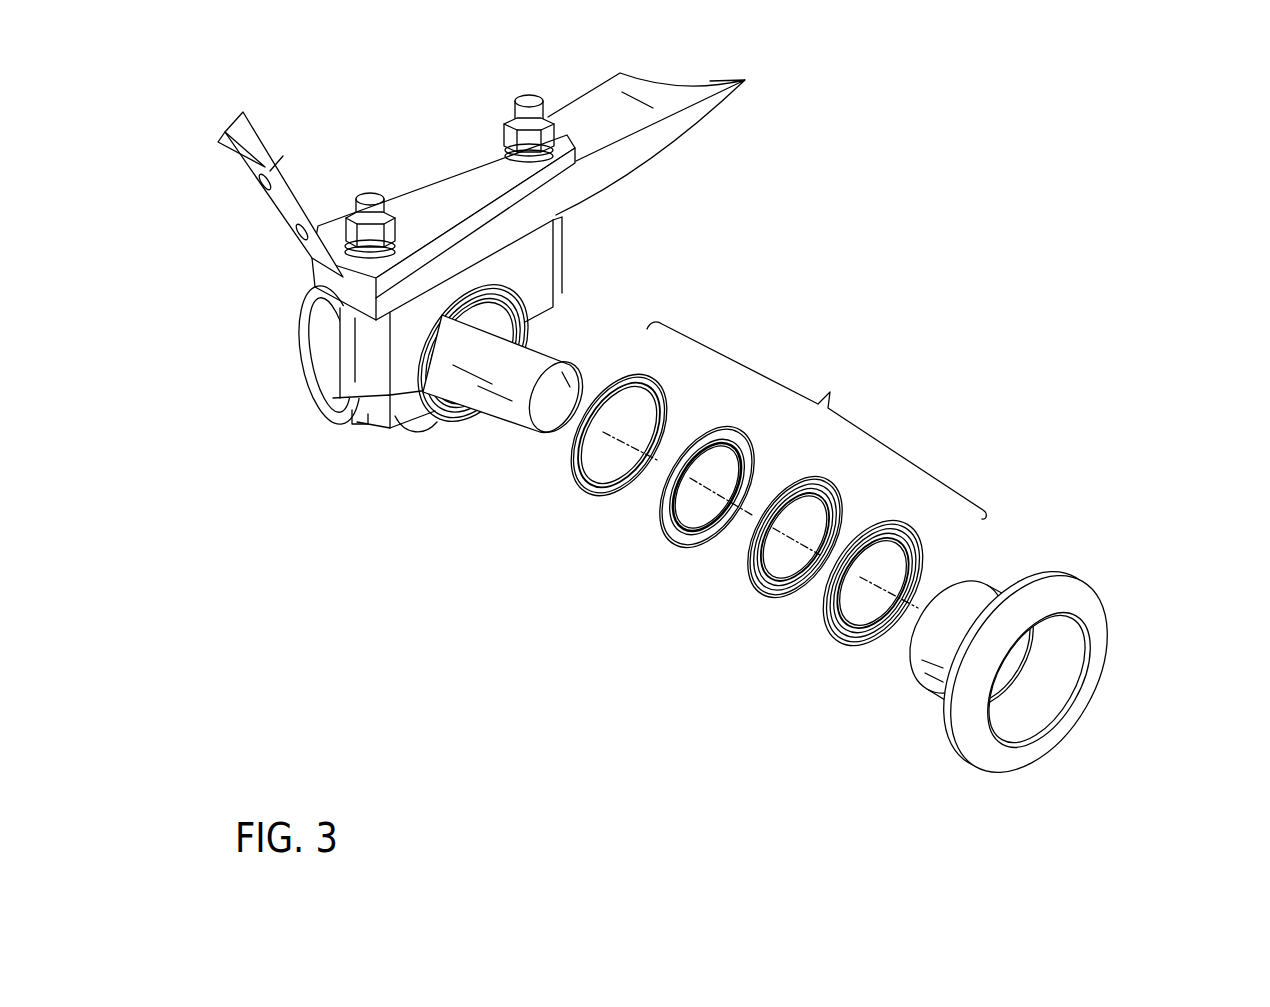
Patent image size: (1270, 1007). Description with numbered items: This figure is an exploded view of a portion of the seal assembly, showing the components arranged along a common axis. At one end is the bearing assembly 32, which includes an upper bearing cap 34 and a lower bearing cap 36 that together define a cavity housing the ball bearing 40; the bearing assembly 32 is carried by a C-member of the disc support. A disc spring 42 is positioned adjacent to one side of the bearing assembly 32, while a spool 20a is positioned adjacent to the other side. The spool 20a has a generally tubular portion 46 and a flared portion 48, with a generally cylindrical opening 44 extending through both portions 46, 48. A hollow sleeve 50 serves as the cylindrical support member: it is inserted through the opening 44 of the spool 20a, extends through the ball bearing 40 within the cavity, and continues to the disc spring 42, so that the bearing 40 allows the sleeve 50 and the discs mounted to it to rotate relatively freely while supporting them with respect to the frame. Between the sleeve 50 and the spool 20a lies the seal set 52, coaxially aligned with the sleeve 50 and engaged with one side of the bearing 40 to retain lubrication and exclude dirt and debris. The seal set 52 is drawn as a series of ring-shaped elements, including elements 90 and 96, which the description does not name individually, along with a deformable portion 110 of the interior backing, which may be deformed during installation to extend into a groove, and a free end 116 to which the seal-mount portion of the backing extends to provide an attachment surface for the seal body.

The spool 20a is at (998, 815).
The bearing assembly 32 is at (455, 470).
The upper bearing cap 34 is at (343, 327).
The lower bearing cap 36 is at (380, 425).
The ball bearing 40 is at (433, 417).
The disc spring 42 is at (318, 418).
The generally cylindrical opening 44 is at (1070, 646).
The generally tubular portion 46 is at (980, 600).
The flared portion 48 is at (1057, 605).
The hollow sleeve 50 is at (540, 358).
The seal set 52 is at (830, 392).
The first seal ring 90 is at (590, 500).
The second seal ring 96 is at (695, 548).
The deformable portion 110 is at (793, 597).
The free end 116 is at (855, 647).